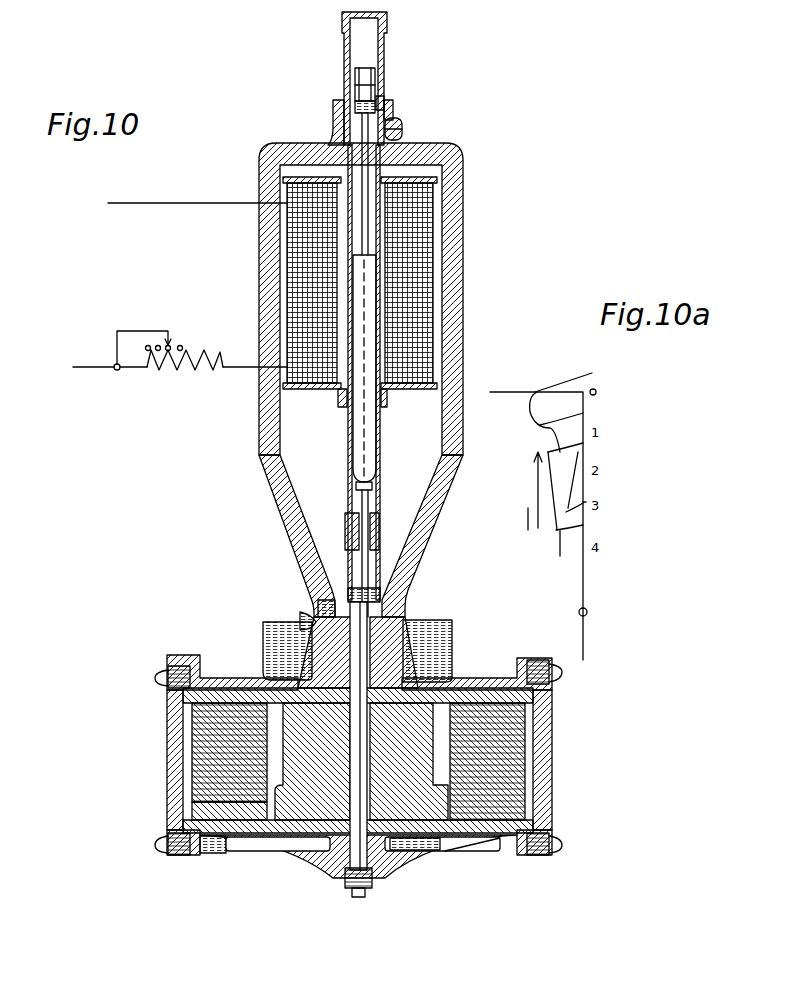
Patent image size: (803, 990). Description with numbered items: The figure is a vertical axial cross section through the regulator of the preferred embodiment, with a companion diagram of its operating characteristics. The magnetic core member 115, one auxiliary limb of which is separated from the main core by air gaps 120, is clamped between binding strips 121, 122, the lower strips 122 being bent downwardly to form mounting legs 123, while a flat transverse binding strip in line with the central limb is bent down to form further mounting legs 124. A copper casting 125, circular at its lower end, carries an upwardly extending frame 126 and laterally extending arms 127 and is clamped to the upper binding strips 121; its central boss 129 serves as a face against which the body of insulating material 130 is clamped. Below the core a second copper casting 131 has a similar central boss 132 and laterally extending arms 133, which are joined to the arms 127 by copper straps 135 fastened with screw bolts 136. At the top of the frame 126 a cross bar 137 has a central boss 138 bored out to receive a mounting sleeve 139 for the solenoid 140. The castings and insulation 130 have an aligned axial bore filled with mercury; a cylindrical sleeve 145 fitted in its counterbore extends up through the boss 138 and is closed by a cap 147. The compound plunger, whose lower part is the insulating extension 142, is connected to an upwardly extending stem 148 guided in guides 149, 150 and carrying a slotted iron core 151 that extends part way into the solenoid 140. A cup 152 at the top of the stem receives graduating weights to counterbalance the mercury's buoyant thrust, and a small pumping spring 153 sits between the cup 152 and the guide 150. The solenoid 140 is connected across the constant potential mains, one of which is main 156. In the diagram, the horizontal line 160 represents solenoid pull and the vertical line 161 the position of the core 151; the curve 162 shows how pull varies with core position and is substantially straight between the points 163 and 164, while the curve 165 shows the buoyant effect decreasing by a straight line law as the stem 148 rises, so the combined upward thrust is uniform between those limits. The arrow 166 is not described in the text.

In FIG. 10, the core member 115 is at (212, 772).
In FIG. 10, the air gaps 120 is at (361, 761).
In FIG. 10, the binding strips 121 is at (188, 696).
In FIG. 10, the binding strips 122 is at (180, 848).
In FIG. 10, the mounting legs 123 is at (410, 612).
In FIG. 10, the mounting legs 124 is at (330, 604).
In FIG. 10, the copper casting 125 is at (304, 618).
In FIG. 10, the frame 126 is at (268, 478).
In FIG. 10, the arms 127 is at (232, 682).
In FIG. 10, the central boss 129 is at (268, 675).
In FIG. 10, the body of insulating material 130 is at (270, 842).
In FIG. 10, the copper casting 131 is at (424, 852).
In FIG. 10, the central boss 132 is at (442, 846).
In FIG. 10, the arms 133 is at (212, 852).
In FIG. 10, the copper straps 135 is at (172, 752).
In FIG. 10, the screw bolts 136 is at (556, 672).
In FIG. 10, the cross bar 137 is at (289, 155).
In FIG. 10, the central boss 138 is at (336, 122).
In FIG. 10, the mounting sleeve 139 is at (386, 108).
In FIG. 10, the solenoid 140 is at (410, 218).
In FIG. 10, the insulating extension 142 is at (340, 860).
In FIG. 10, the cylindrical sleeve 145 is at (380, 430).
In FIG. 10, the cap 147 is at (345, 27).
In FIG. 10, the stem 148 is at (372, 503).
In FIG. 10, the guide 149 is at (345, 525).
In FIG. 10, the guide 150 is at (402, 138).
In FIG. 10, the iron core 151 is at (356, 417).
In FIG. 10, the cup 152 is at (378, 74).
In FIG. 10, the pumping spring 153 is at (393, 118).
In FIG. 10, the constant potential main 156 is at (160, 376).
In FIG. 10A, the horizontal line 160 is at (511, 392).
In FIG. 10A, the vertical line 161 is at (583, 500).
In FIG. 10A, the curve 162 is at (583, 413).
In FIG. 10A, the point 163 is at (583, 525).
In FIG. 10A, the point 164 is at (583, 443).
In FIG. 10A, the curve 165 is at (583, 503).
In FIG. 10A, the arrow 166 is at (530, 516).